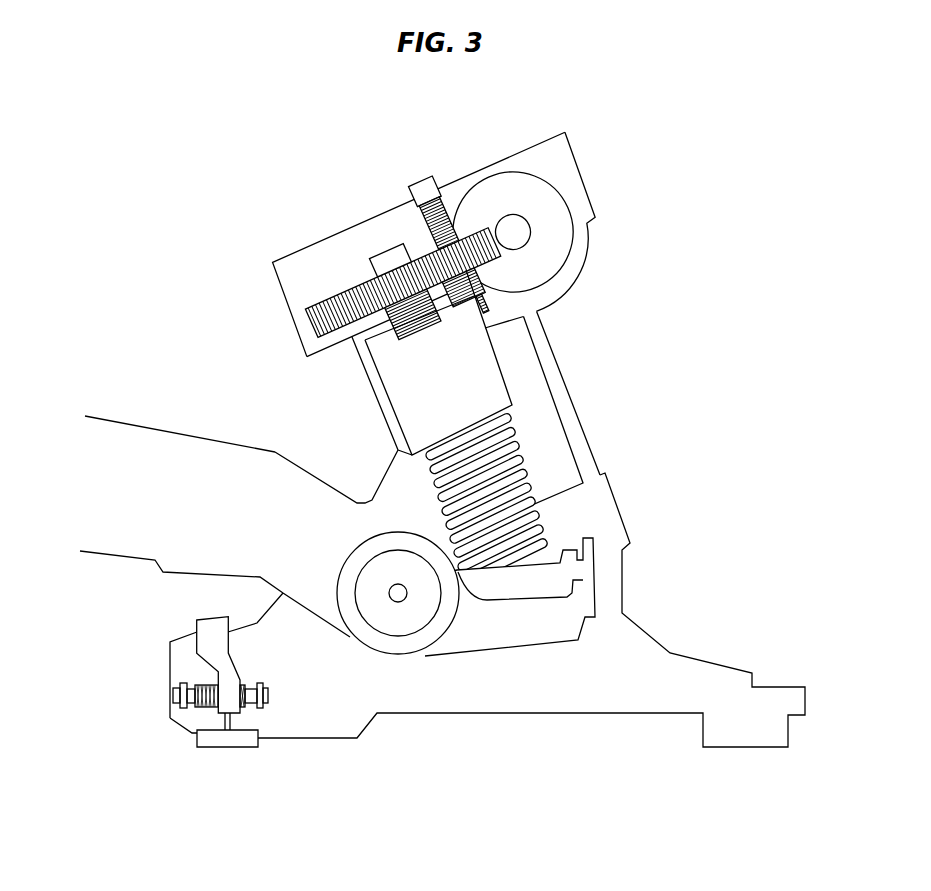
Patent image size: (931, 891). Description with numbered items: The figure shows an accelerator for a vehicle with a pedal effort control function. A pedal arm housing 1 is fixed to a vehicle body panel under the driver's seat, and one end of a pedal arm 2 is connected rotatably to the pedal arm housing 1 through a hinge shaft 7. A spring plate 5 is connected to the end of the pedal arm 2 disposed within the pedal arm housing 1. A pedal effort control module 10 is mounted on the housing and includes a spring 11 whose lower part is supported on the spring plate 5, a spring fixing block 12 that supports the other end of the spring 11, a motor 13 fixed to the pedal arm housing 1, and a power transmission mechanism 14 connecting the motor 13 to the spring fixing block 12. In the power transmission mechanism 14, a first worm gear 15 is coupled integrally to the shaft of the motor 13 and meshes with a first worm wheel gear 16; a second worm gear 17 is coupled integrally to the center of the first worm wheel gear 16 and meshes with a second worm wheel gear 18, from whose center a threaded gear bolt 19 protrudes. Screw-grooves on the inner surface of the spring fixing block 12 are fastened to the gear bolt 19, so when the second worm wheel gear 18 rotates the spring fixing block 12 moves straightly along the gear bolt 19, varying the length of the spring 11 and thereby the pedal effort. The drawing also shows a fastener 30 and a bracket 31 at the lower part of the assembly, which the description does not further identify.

The pedal arm housing 1 is at (623, 575).
The pedal arm 2 is at (142, 445).
The spring plate 5 is at (519, 582).
The hinge shaft 7 is at (407, 628).
The pedal effort control module 10 is at (435, 244).
The spring 11 is at (525, 483).
The spring fixing block 12 is at (475, 378).
The motor 13 is at (545, 425).
The power transmission mechanism 14 is at (550, 221).
The first worm gear 15 is at (434, 213).
The first worm wheel gear 16 is at (513, 232).
The second worm gear 17 is at (513, 232).
The second worm wheel gear 18 is at (402, 283).
The gear bolt 19 is at (428, 285).
The bolt 30 is at (232, 710).
The bracket 31 is at (207, 632).